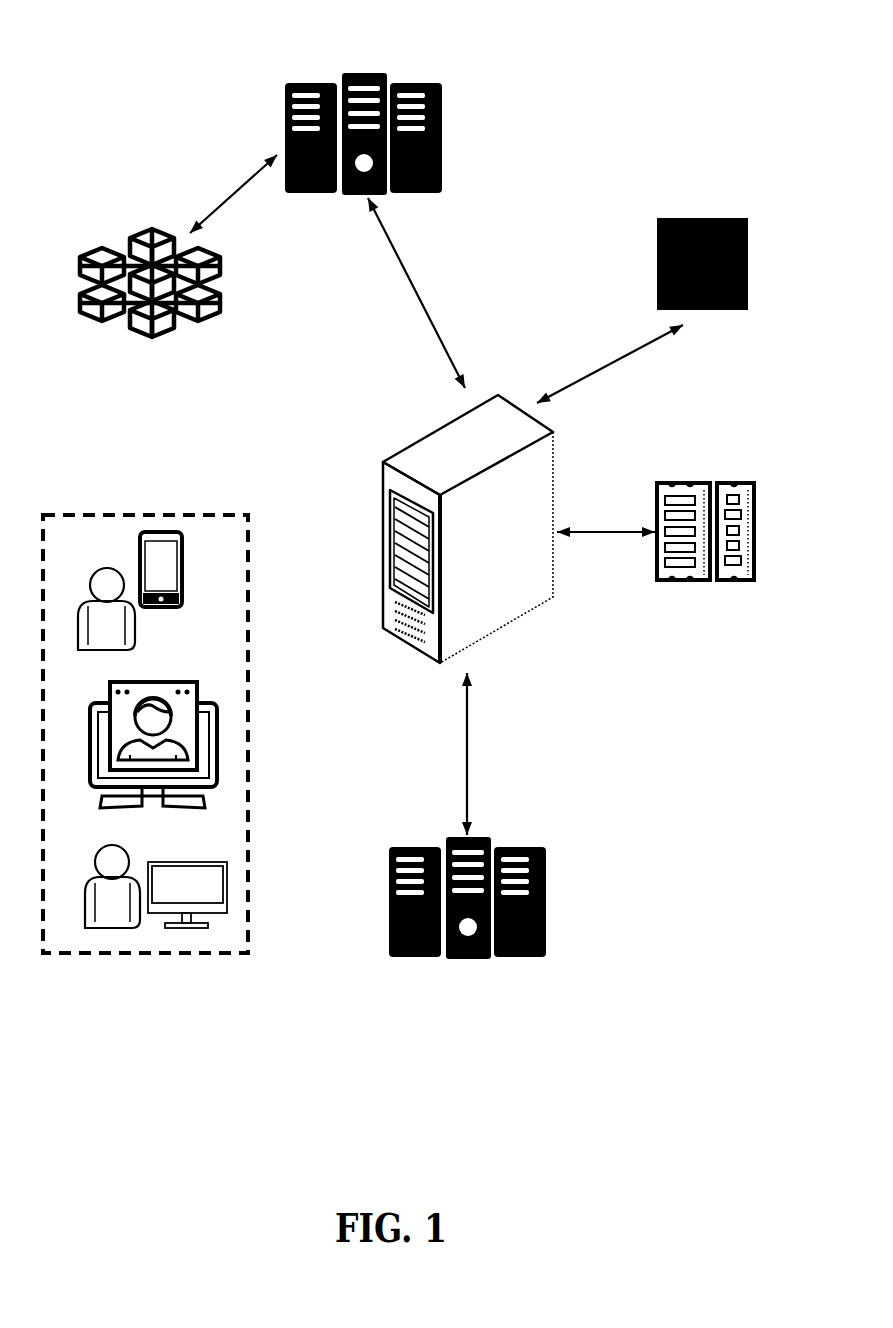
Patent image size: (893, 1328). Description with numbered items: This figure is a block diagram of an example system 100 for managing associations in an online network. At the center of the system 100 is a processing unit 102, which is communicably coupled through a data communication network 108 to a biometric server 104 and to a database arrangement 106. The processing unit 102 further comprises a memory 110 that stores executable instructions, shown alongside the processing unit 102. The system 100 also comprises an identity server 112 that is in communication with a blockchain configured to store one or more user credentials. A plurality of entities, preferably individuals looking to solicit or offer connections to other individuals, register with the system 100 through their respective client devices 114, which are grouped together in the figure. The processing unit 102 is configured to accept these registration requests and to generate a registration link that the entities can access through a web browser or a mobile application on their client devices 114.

The system 100 is at (235, 1027).
The processing unit 102 is at (512, 610).
The biometric server 104 is at (548, 930).
The database arrangement 106 is at (683, 215).
The data communication network 108 is at (150, 252).
The memory 110 is at (730, 583).
The identity server 112 is at (357, 72).
The client devices 114 is at (145, 512).